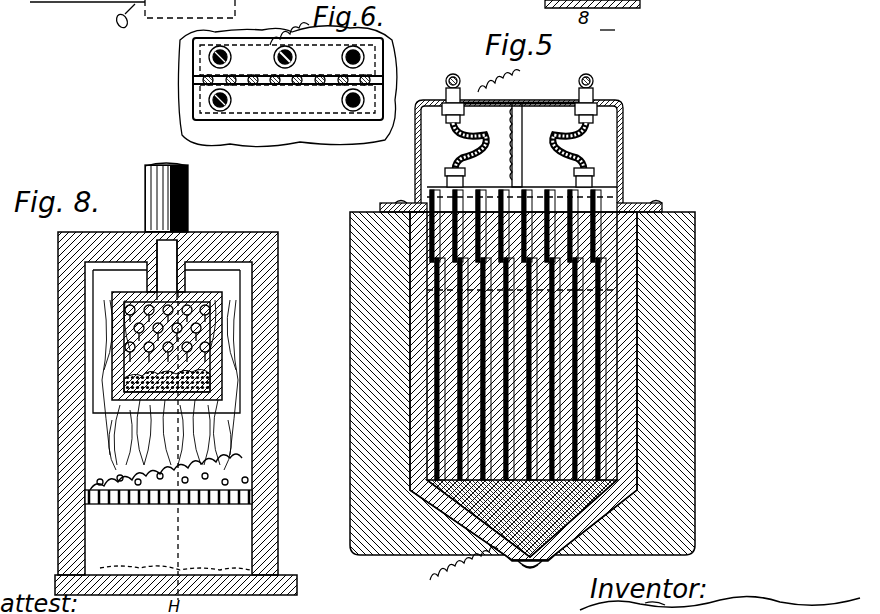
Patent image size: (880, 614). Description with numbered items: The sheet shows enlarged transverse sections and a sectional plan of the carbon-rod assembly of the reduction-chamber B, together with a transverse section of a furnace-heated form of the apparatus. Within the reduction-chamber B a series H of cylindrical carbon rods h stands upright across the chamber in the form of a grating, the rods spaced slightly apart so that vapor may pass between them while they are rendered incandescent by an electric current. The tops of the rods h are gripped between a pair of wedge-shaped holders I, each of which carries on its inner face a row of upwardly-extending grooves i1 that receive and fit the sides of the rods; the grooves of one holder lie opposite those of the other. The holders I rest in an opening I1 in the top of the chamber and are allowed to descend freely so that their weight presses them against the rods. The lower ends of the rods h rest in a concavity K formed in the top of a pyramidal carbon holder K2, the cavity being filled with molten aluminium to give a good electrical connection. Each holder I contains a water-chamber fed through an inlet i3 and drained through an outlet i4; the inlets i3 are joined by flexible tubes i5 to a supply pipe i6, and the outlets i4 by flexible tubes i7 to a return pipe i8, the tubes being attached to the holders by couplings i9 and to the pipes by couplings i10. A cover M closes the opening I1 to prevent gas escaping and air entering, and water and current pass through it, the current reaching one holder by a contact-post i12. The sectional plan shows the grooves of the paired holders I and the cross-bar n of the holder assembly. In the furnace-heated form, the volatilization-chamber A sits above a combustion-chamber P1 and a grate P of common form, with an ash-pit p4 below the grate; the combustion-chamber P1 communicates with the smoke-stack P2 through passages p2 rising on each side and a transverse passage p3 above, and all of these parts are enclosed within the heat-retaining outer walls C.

In FIG. 6, the holder I is at (375, 53).
In FIG. 5, the holder I is at (623, 182).
In FIG. 5, the opening I1 is at (662, 216).
In FIG. 6, the connecting bar n is at (258, 86).
In FIG. 6, the inlet i3 is at (223, 165).
In FIG. 5, the inlet i3 is at (415, 155).
In FIG. 6, the outlet i4 is at (353, 103).
In FIG. 5, the outlet i4 is at (623, 150).
In FIG. 6, the pipe i6 is at (377, 100).
In FIG. 6, the contact-post i12 is at (296, 60).
In FIG. 6, the series of carbon rods H is at (202, 84).
In FIG. 8, the outer walls C is at (268, 360).
In FIG. 5, the outer walls C is at (680, 313).
In FIG. 8, the smoke-stack P2 is at (190, 206).
In FIG. 8, the passage p2 is at (112, 297).
In FIG. 8, the transverse passage p3 is at (213, 278).
In FIG. 8, the volatilization-chamber A is at (188, 338).
In FIG. 8, the combustion-chamber P1 is at (170, 385).
In FIG. 8, the ash-pit p4 is at (168, 500).
In FIG. 8, the grate P is at (175, 544).
In FIG. 5, the concavity K is at (580, 462).
In FIG. 5, the holder K2 is at (522, 518).
In FIG. 5, the reduction-chamber B is at (592, 372).
In FIG. 5, the carbon rod h is at (470, 370).
In FIG. 5, the cover M is at (623, 128).
In FIG. 5, the groove i1 is at (623, 140).
In FIG. 5, the flexible tube i5 is at (511, 155).
In FIG. 5, the flexible tube i7 is at (623, 112).
In FIG. 5, the pipe i8 is at (598, 78).
In FIG. 5, the coupling i9 is at (519, 145).
In FIG. 5, the coupling i10 is at (512, 63).